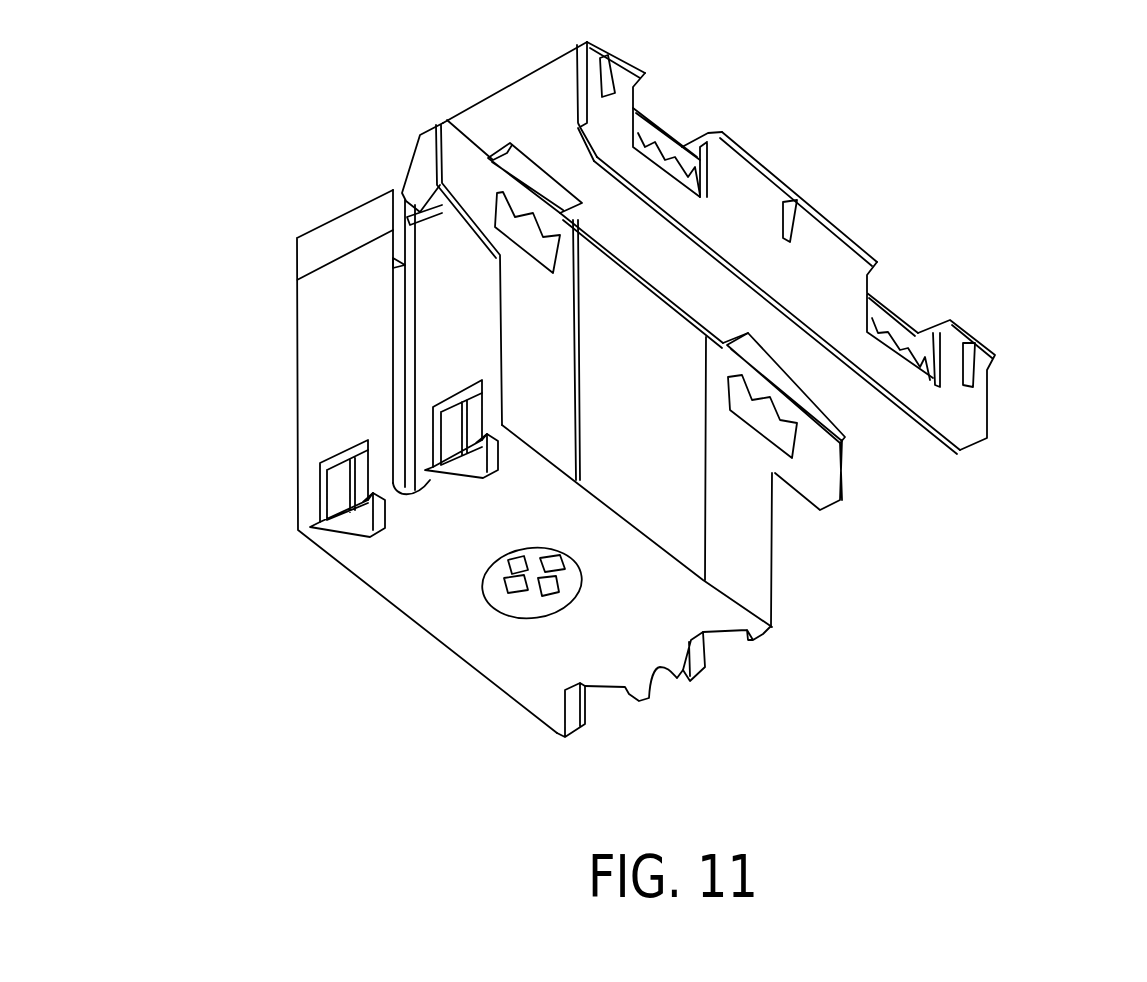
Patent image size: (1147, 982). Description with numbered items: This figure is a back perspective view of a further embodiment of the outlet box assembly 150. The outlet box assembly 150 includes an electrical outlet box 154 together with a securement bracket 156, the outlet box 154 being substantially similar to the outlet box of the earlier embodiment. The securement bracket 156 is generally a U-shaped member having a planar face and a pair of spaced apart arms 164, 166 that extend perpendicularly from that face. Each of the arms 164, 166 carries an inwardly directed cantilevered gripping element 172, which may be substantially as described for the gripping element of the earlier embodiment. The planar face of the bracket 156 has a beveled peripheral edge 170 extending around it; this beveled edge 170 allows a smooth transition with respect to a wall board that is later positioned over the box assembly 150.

The outlet box assembly 150 is at (940, 148).
The electrical outlet box 154 is at (640, 605).
The securement bracket 156 is at (615, 108).
The arm 164 is at (972, 413).
The arm 166 is at (467, 167).
The beveled peripheral edge 170 is at (960, 340).
The cantilevered gripping element 172 is at (528, 240).